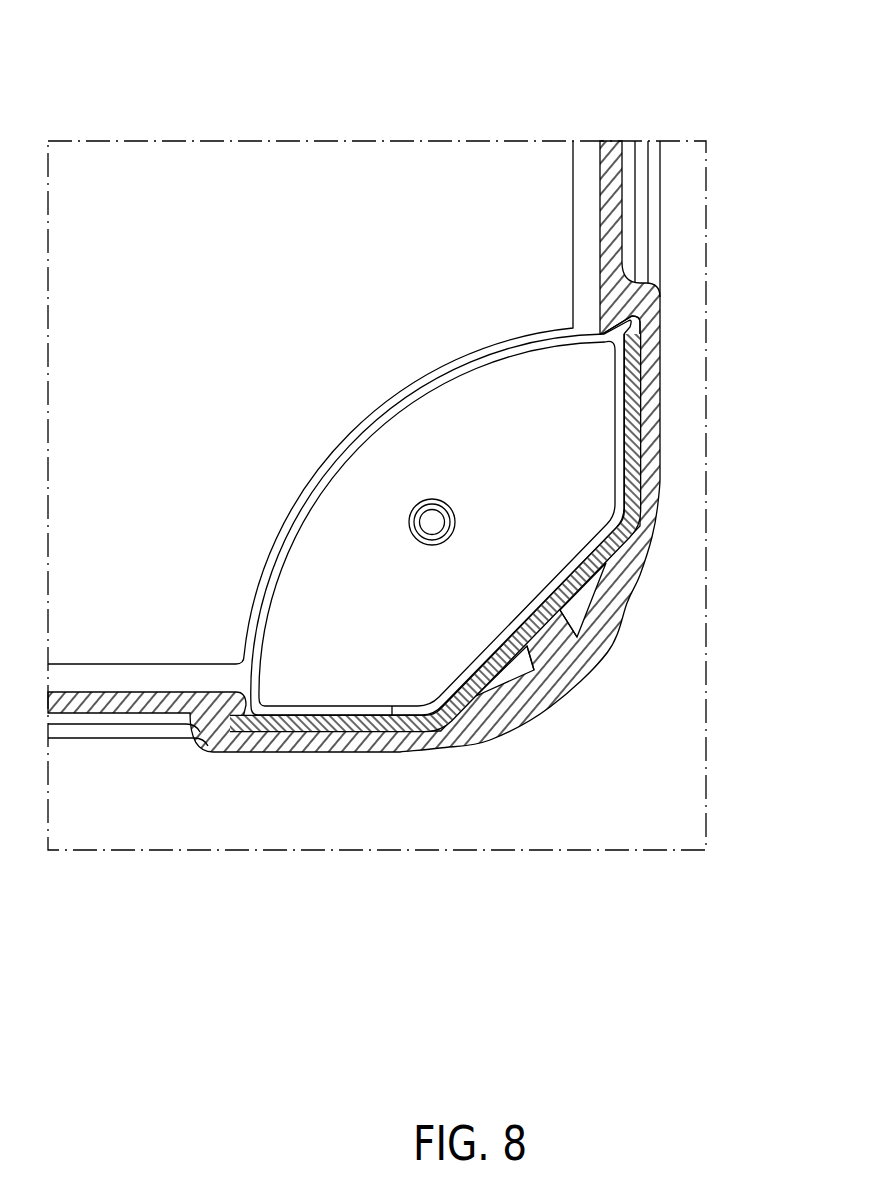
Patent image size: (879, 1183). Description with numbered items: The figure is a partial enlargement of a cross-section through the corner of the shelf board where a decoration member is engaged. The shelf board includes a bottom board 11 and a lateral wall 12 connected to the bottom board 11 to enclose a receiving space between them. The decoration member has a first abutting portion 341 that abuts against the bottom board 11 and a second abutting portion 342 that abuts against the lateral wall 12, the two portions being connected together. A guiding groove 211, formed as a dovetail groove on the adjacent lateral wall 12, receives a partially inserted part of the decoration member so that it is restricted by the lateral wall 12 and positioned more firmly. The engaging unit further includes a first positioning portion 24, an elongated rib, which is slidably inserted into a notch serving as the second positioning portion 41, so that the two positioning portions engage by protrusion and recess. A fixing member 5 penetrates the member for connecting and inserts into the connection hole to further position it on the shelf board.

The bottom board 11 is at (198, 185).
The lateral wall 12 is at (612, 207).
The guiding groove 211 is at (612, 306).
The first abutting portion 341 is at (590, 405).
The second abutting portion 342 is at (632, 520).
The first positioning portion 24 is at (550, 643).
The second positioning portion 41 is at (530, 680).
The fixing member 5 is at (427, 528).